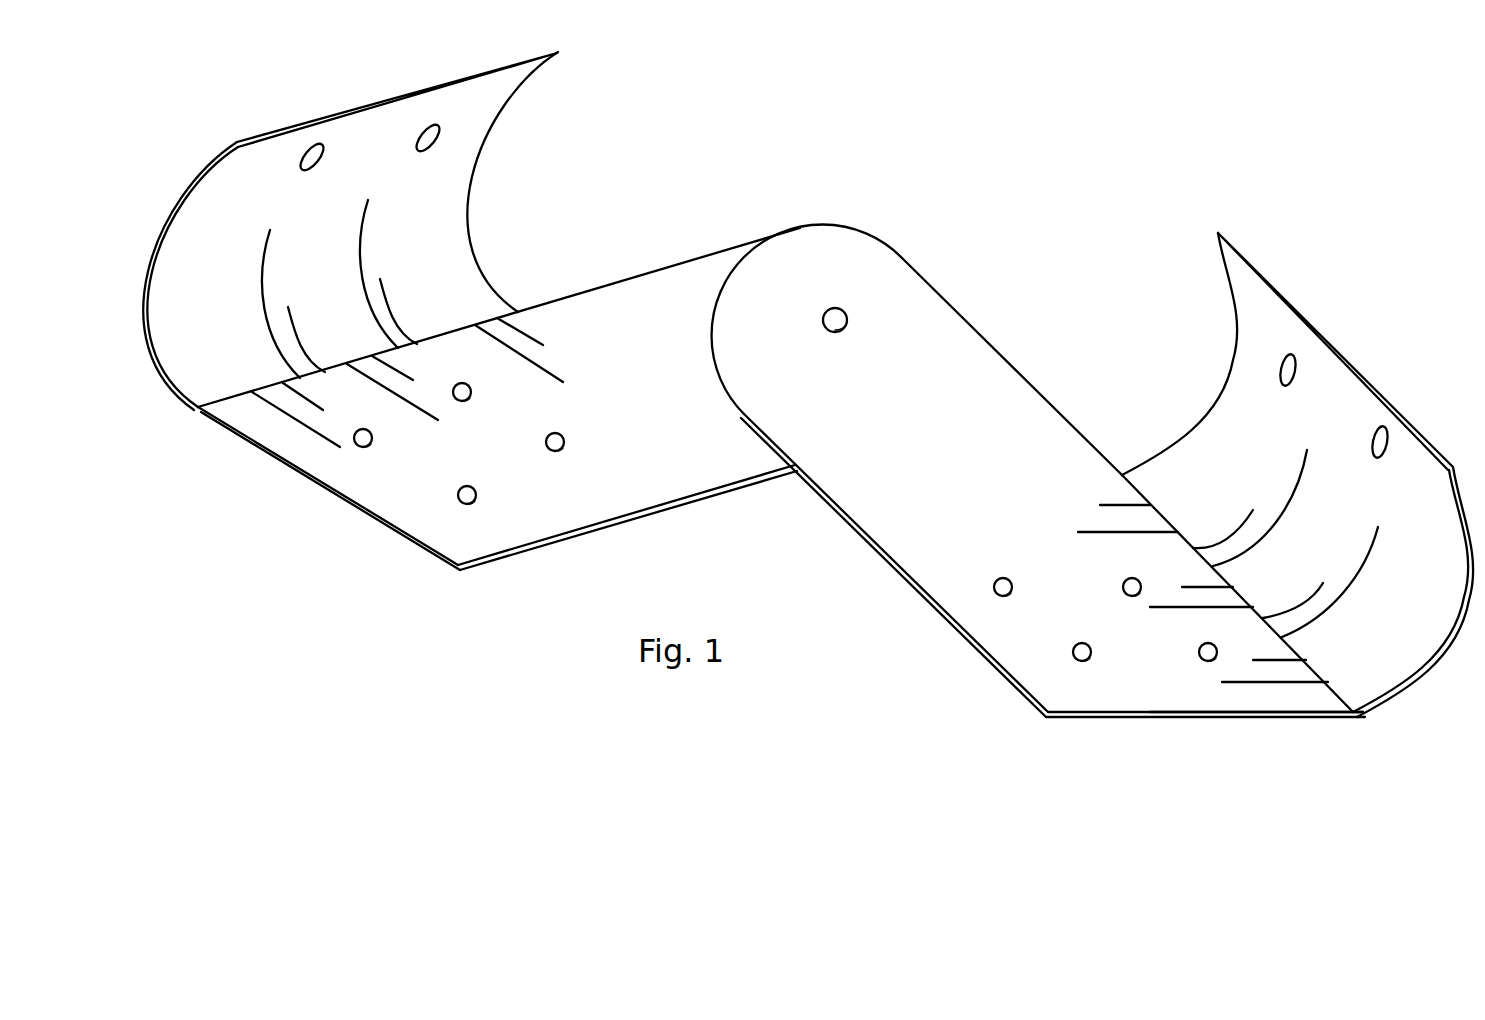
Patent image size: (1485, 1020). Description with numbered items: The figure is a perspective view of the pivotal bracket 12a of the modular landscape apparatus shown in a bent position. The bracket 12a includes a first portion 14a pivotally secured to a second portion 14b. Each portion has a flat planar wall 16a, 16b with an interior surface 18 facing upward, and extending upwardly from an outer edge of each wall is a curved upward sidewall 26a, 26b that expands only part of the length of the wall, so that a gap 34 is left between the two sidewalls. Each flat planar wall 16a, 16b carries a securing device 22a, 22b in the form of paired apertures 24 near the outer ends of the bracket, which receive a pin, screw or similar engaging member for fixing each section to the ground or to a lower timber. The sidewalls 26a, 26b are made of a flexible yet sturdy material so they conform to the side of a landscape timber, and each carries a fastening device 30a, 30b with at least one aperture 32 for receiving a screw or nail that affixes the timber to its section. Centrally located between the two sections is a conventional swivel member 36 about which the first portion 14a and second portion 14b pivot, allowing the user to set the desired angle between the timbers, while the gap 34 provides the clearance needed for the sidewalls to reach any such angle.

The gap 34 is at (1004, 159).
The pivotal bracket 12a is at (828, 609).
The first portion 14a is at (428, 523).
The flat planar wall 16a is at (532, 520).
The securing device 22a is at (585, 463).
The aperture 24 is at (358, 443).
The upward sidewall 26a is at (470, 205).
The fastening device 30a is at (249, 213).
The aperture 32 is at (420, 152).
The interior surface 18 is at (1010, 380).
The swivel member 36 is at (838, 333).
The second portion 14b is at (1023, 663).
The flat planar wall 16b is at (1140, 688).
The securing device 22b is at (1029, 551).
The upward sidewall 26b is at (1212, 438).
The fastening device 30b is at (1385, 488).